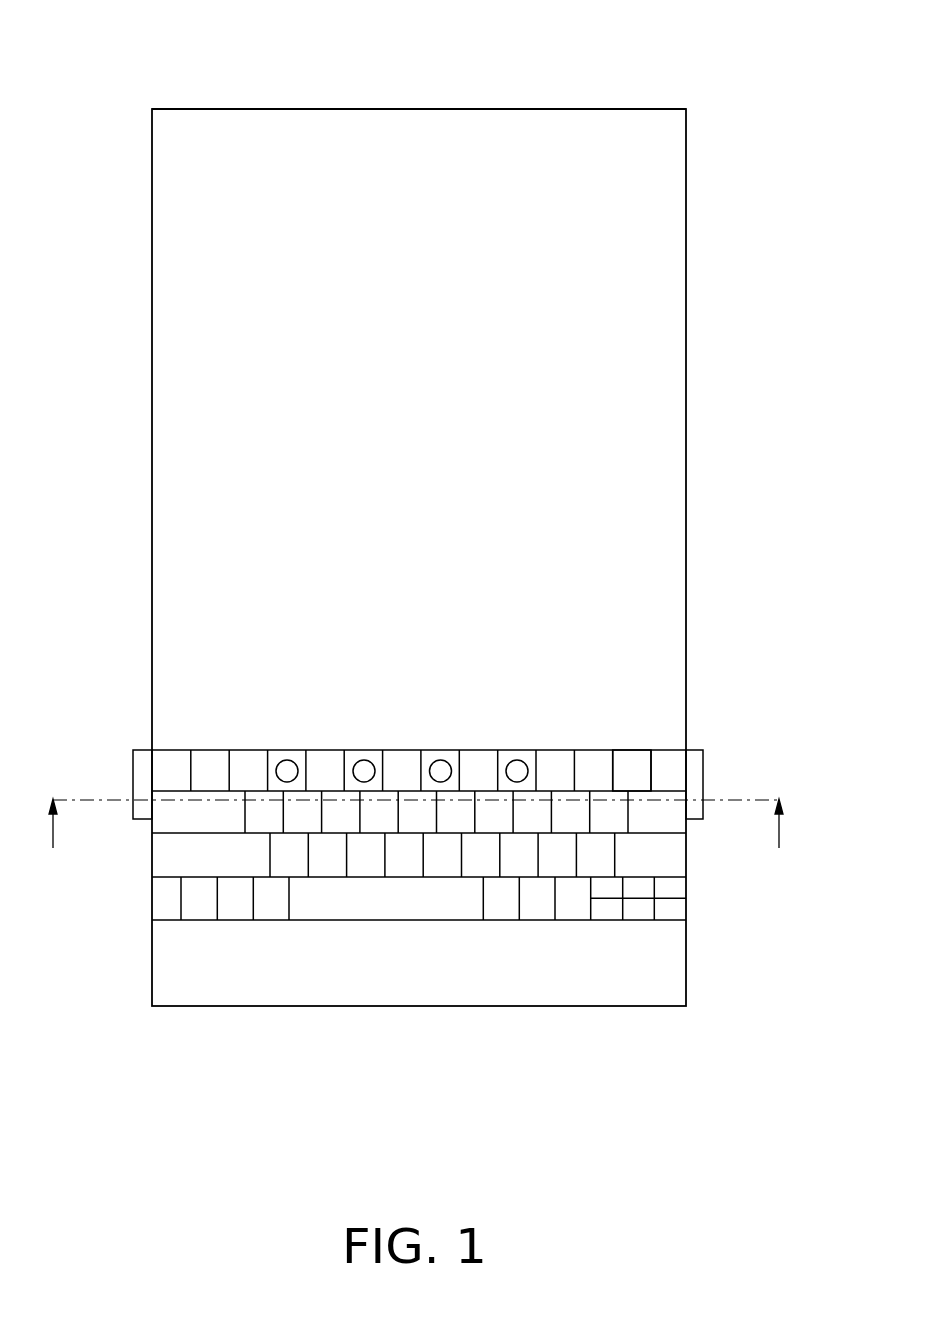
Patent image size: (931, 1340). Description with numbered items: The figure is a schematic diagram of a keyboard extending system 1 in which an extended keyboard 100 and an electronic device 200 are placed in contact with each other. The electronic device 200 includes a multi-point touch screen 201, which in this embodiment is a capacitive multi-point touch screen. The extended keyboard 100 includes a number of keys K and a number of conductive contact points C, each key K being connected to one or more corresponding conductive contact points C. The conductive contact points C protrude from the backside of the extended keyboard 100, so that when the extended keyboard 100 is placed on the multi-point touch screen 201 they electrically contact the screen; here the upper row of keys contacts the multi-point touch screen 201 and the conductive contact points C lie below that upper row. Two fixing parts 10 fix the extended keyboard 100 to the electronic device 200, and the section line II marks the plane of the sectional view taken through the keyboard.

The keyboard extending system 1 is at (273, 52).
The fixing part 10 is at (143, 768).
The extended keyboard 100 is at (685, 950).
The electronic device 200 is at (685, 347).
The multi-point touch screen 201 is at (637, 308).
The conductive contact point C is at (279, 764).
The key K is at (632, 762).
The section line II- II is at (416, 843).